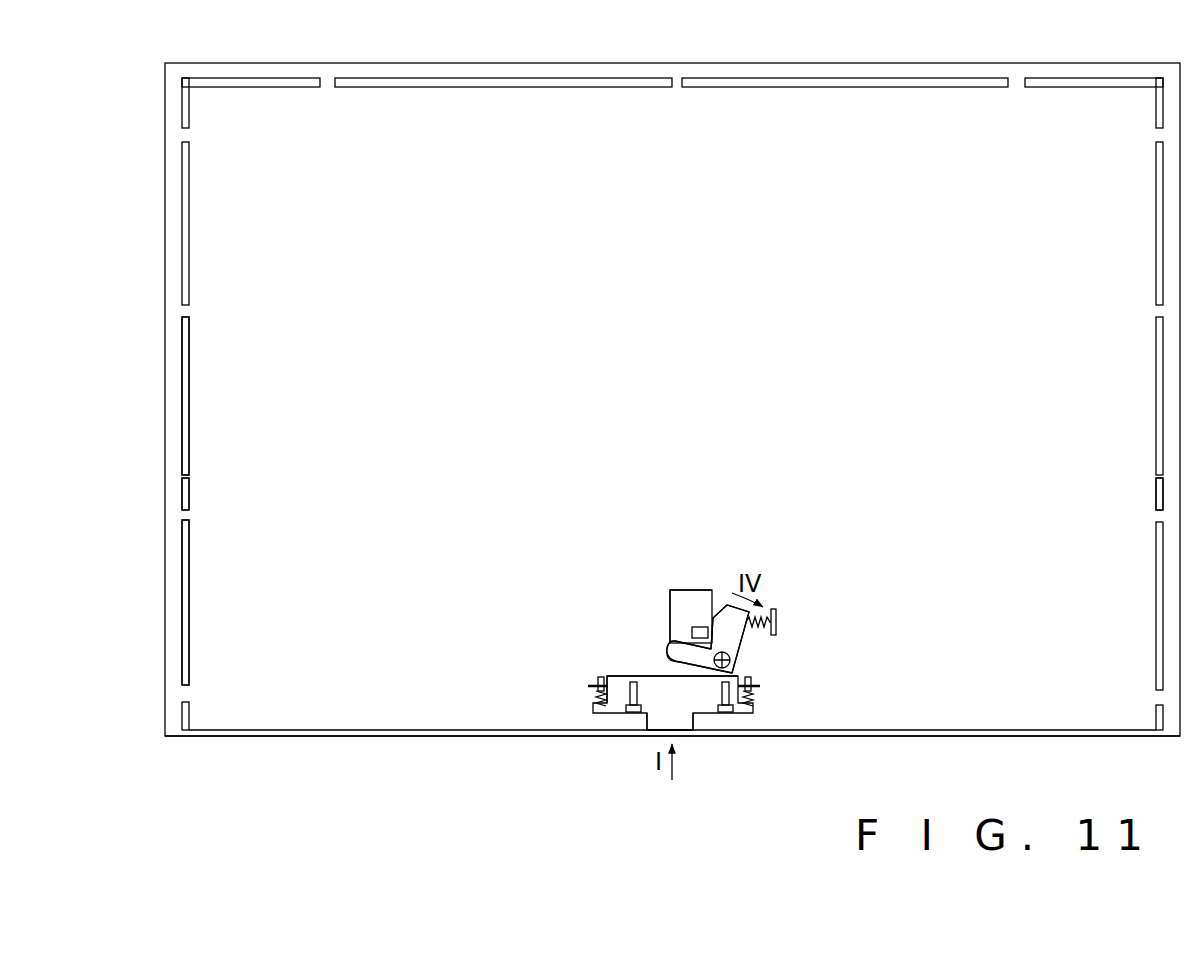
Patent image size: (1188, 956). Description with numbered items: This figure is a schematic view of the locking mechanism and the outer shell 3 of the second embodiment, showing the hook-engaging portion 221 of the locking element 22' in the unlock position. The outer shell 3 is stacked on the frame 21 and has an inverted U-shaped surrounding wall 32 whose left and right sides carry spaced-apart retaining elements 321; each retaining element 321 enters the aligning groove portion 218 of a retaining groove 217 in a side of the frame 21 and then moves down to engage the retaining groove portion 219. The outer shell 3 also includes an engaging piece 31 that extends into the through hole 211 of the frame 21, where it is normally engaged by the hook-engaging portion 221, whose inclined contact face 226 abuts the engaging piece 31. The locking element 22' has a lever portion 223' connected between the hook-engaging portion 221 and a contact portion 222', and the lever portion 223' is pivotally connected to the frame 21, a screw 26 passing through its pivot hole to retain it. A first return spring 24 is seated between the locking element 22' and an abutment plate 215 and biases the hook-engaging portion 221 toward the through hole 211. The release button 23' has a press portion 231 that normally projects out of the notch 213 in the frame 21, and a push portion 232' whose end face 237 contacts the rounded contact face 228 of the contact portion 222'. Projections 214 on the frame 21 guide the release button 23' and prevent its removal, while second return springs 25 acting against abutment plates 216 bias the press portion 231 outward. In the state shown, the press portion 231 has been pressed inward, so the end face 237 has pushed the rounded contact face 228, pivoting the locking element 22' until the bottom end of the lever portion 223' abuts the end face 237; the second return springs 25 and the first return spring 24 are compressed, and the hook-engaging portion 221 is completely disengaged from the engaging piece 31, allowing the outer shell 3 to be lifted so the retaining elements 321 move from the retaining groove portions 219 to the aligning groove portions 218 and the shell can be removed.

The outer shell 3 is at (702, 56).
The frame 21 is at (314, 740).
The surrounding wall 32 is at (762, 72).
The retaining groove 217 is at (194, 498).
The aligning groove portion 218 is at (190, 466).
The retaining groove portion 219 is at (186, 534).
The retaining element 321 is at (190, 515).
The engaging piece 31 is at (692, 627).
The through hole 211 is at (670, 584).
The inclined contact face 226 is at (716, 612).
The locking element 22' is at (767, 639).
The hook-engaging portion 221 is at (720, 606).
The contact portion 222' is at (651, 639).
The lever portion 223' is at (644, 609).
The rounded contact face 228 is at (672, 668).
The screw 26 is at (740, 660).
The abutment plate 215 is at (779, 620).
The first return spring 24 is at (770, 610).
The release button 23' is at (673, 747).
The end face 237 is at (697, 677).
The press portion 231 is at (660, 723).
The notch 213 is at (702, 735).
The push portion 232' is at (562, 671).
The projection 214 is at (628, 713).
The second return spring 25 is at (600, 694).
The abutment plate 216 is at (590, 687).